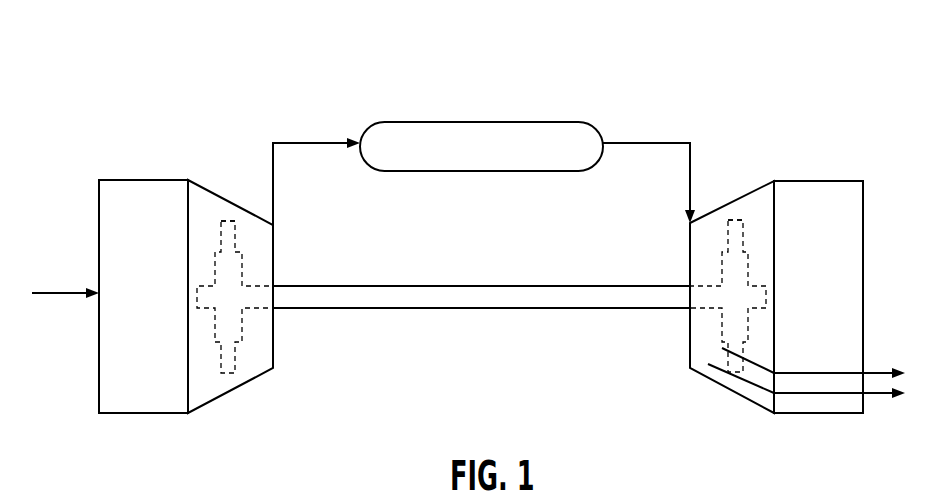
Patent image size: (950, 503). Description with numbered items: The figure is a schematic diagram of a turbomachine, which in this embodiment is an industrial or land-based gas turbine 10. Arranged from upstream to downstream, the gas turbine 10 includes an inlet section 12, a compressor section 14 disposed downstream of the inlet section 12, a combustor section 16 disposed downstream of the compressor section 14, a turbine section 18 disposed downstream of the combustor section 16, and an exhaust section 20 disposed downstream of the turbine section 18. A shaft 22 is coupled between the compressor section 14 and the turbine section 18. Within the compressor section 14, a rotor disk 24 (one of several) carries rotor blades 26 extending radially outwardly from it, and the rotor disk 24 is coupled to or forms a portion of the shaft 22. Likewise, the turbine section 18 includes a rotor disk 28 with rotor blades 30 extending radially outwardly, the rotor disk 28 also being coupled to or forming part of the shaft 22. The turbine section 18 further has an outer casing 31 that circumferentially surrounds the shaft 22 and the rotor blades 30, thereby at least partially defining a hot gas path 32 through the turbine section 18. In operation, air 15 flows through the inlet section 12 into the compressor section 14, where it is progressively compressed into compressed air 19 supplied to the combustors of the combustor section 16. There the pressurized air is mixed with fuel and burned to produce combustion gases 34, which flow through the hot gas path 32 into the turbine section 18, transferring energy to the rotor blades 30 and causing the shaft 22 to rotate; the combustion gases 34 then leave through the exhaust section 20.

The gas turbine 10 is at (358, 48).
The inlet section 12 is at (118, 180).
The compressor section 14 is at (220, 192).
The air 15 is at (48, 293).
The combustor section 16 is at (540, 122).
The turbine section 18 is at (760, 188).
The compressed air 19 is at (303, 143).
The exhaust section 20 is at (840, 181).
The shaft 22 is at (430, 309).
The rotor disk 24 is at (215, 268).
The rotor blade 26 is at (220, 230).
The rotor disk 28 is at (722, 262).
The rotor blade 30 is at (737, 220).
The outer casing 31 is at (755, 405).
The hot gas path 32 is at (727, 390).
The combustion gases 34 is at (637, 145).